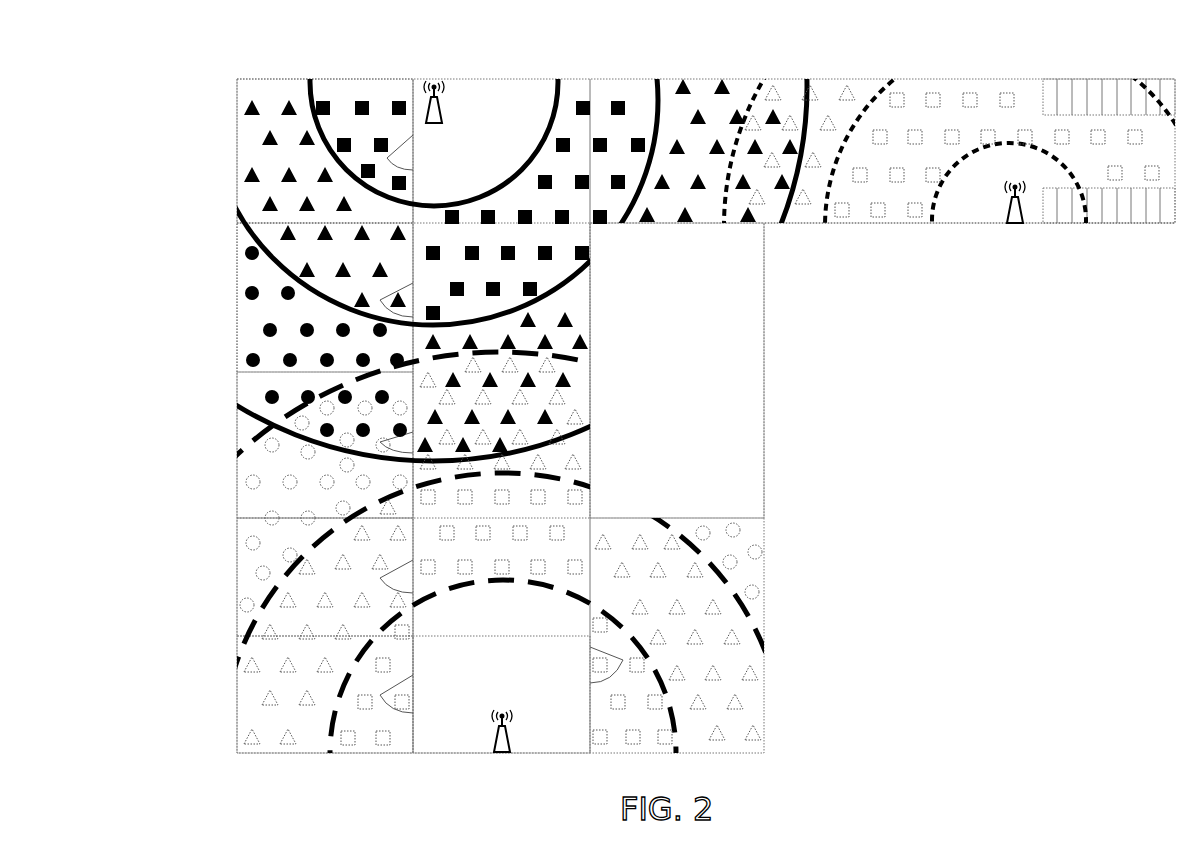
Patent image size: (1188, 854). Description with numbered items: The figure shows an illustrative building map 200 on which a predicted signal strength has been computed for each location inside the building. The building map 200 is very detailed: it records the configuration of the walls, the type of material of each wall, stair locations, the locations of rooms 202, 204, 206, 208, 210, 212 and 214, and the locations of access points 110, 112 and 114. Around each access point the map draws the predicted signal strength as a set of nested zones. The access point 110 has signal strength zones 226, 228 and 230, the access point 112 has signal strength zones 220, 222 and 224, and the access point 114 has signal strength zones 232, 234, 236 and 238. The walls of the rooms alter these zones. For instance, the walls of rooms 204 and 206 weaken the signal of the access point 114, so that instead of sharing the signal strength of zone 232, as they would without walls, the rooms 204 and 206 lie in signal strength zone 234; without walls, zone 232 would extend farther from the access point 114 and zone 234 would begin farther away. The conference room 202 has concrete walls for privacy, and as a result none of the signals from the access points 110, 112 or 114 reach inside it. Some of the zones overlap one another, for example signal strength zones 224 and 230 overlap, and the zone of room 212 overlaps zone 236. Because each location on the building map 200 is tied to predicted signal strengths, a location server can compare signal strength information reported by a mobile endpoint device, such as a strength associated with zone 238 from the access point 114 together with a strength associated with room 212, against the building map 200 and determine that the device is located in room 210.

The building map 200 is at (173, 79).
The access point 110 is at (1012, 230).
The access point 112 is at (441, 93).
The access point 114 is at (506, 753).
The conference room 202 is at (765, 370).
The room 204 is at (765, 640).
The room 206 is at (237, 697).
The room 208 is at (237, 580).
The room 210 is at (237, 447).
The room 212 is at (237, 299).
The room 214 is at (237, 151).
The signal strength zone 220 is at (508, 103).
The signal strength zone 222 is at (640, 95).
The signal strength zone 224 is at (742, 103).
The signal strength zone 226 is at (955, 213).
The signal strength zone 228 is at (1025, 103).
The signal strength zone 230 is at (862, 103).
The signal strength zone 232 is at (450, 745).
The signal strength zone 234 is at (520, 577).
The signal strength zone 236 is at (590, 398).
The signal strength zone 238 is at (237, 513).